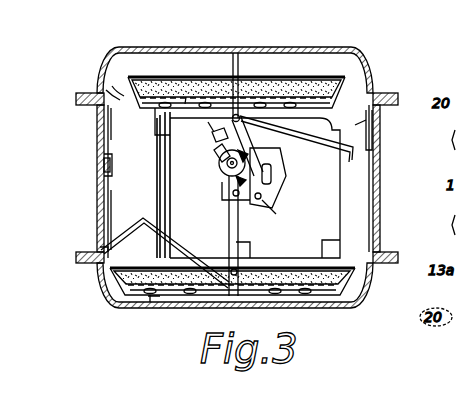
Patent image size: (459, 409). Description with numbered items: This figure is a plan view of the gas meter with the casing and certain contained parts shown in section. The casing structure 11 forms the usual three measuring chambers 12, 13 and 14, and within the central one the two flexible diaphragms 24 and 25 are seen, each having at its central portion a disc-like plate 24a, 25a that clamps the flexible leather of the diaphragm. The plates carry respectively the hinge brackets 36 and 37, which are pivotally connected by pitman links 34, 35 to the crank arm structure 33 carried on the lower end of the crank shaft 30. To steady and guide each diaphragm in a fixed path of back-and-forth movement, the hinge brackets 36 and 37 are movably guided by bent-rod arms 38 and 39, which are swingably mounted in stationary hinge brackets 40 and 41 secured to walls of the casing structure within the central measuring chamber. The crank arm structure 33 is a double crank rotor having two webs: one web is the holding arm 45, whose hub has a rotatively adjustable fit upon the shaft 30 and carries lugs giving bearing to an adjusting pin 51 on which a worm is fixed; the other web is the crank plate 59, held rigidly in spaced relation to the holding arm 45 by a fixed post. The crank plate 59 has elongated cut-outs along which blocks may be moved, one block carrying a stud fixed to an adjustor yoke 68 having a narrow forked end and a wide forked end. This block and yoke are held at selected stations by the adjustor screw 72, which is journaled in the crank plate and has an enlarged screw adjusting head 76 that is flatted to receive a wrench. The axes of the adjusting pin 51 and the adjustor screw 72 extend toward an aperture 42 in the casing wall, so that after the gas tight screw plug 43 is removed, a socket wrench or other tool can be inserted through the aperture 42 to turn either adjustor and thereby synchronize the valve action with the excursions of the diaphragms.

The casing structure 11 is at (98, 206).
The measuring chamber 12 is at (362, 286).
The measuring chamber 13 is at (340, 206).
The measuring chamber 14 is at (338, 66).
The flexible diaphragm 24 is at (108, 278).
The disc-like plate 24a is at (150, 302).
The flexible diaphragm 25 is at (127, 80).
The disc-like plate 25a is at (185, 102).
The crank shaft 30 is at (219, 174).
The crank arm structure 33 is at (210, 199).
The pitman link 34 is at (229, 246).
The pitman link 35 is at (255, 146).
The hinge bracket 36 is at (268, 268).
The hinge bracket 37 is at (240, 50).
The bent-rod arm 38 is at (137, 224).
The bent-rod arm 39 is at (352, 162).
The stationary hinge bracket 40 is at (99, 251).
The stationary hinge bracket 41 is at (372, 130).
The aperture 42 is at (104, 156).
The gas tight screw plug 43 is at (102, 167).
The holding arm 45 is at (225, 196).
The adjusting pin 51 is at (212, 133).
The crank plate 59 is at (268, 170).
The adjustor yoke 68 is at (266, 200).
The adjustor screw 72 is at (262, 210).
The screw adjusting head 76 is at (214, 156).